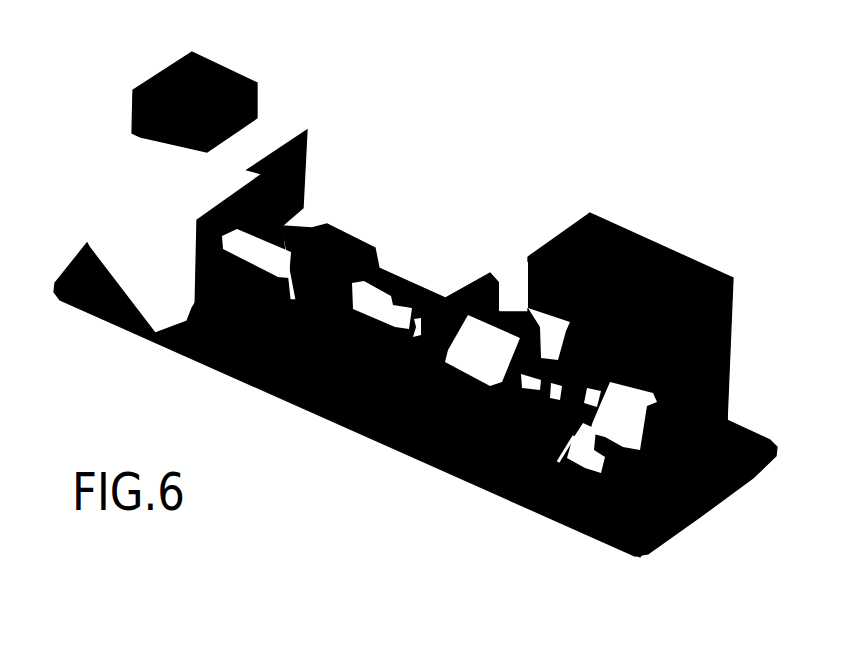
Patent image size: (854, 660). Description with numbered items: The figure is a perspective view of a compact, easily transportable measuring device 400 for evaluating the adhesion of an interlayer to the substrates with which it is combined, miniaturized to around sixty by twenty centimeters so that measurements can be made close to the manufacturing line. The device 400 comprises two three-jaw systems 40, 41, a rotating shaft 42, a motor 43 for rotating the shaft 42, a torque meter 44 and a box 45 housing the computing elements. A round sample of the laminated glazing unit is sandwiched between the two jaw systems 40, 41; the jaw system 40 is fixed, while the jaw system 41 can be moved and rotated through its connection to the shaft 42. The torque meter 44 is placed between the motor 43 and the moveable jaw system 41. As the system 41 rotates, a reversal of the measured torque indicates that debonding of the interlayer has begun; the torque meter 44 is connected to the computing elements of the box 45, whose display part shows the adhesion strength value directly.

The measuring device 400 is at (478, 37).
The three-jaw system 40 is at (538, 512).
The three-jaw system 41 is at (468, 487).
The rotating shaft 42 is at (405, 280).
The motor 43 is at (275, 135).
The torque meter 44 is at (342, 232).
The box 45 is at (615, 225).